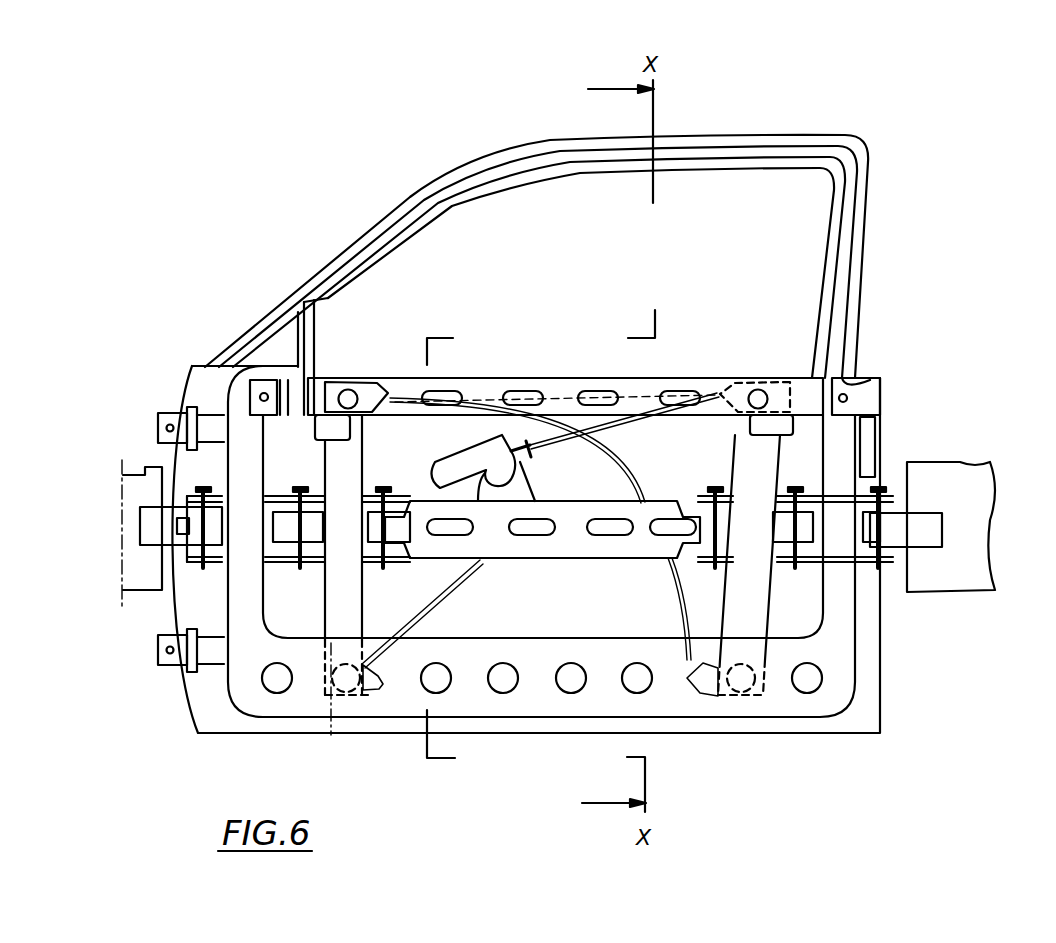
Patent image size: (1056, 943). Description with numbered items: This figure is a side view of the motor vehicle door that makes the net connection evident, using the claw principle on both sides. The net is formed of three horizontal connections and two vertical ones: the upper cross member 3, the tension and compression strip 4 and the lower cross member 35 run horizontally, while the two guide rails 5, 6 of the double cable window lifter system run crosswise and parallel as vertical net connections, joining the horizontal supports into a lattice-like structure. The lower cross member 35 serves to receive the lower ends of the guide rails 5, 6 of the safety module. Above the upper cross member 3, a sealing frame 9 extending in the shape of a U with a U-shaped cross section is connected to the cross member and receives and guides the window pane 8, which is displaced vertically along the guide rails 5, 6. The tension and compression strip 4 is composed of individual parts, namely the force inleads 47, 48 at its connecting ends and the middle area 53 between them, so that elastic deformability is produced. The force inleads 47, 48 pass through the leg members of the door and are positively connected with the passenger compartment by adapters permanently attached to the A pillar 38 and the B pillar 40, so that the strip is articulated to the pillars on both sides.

The upper cross member 3 is at (488, 390).
The tension and compression strip 4 is at (638, 540).
The guide rail 5 is at (331, 735).
The guide rail 6 is at (752, 655).
The window pane 8 is at (768, 311).
The sealing frame 9 is at (833, 262).
The lower cross member 35 is at (548, 695).
The A pillar 38 is at (143, 492).
The B pillar 40 is at (953, 492).
The force inlead 47 is at (287, 533).
The force inlead 48 is at (808, 503).
The middle area 53 is at (518, 542).